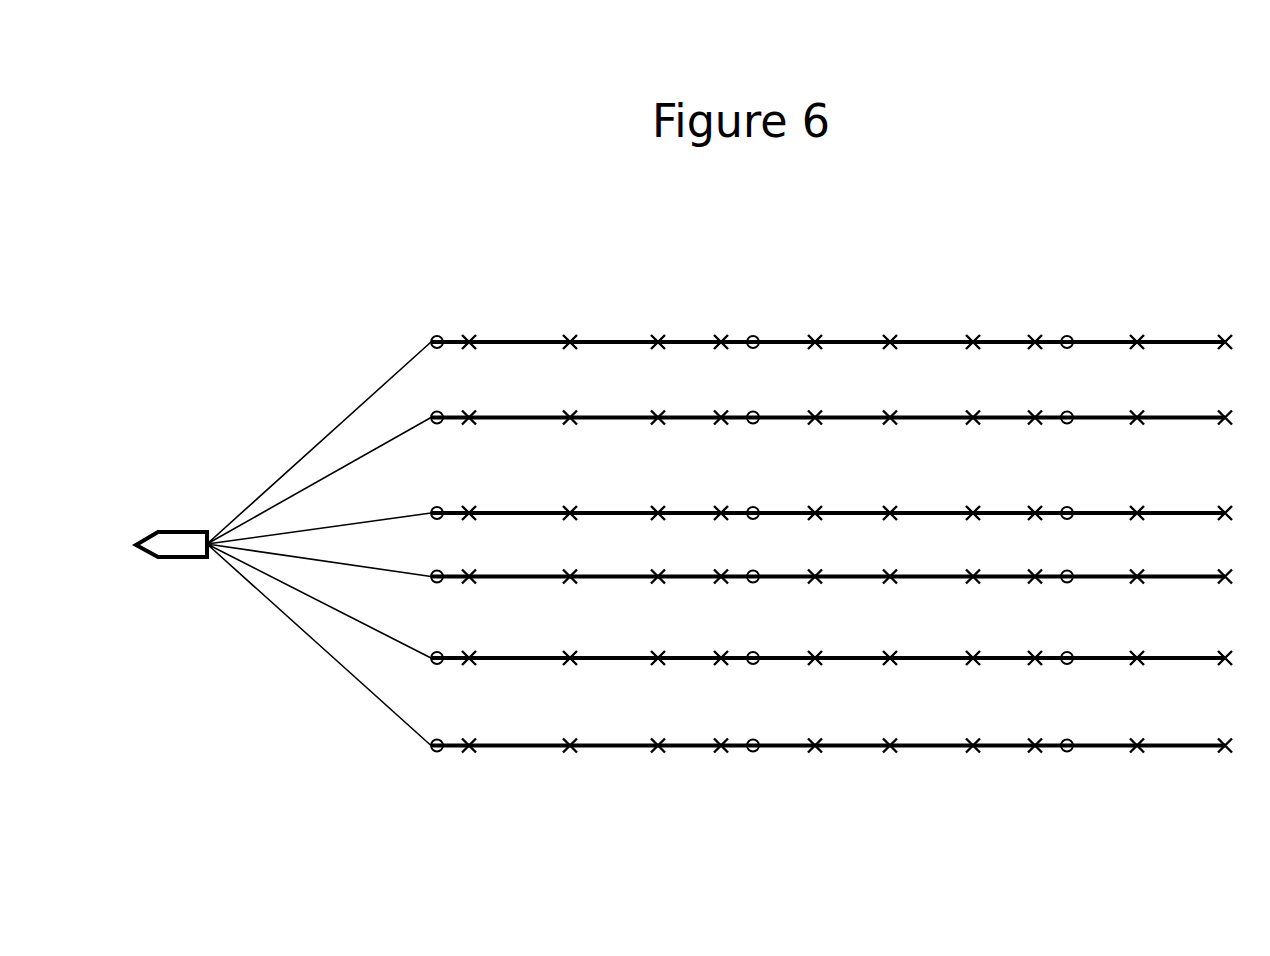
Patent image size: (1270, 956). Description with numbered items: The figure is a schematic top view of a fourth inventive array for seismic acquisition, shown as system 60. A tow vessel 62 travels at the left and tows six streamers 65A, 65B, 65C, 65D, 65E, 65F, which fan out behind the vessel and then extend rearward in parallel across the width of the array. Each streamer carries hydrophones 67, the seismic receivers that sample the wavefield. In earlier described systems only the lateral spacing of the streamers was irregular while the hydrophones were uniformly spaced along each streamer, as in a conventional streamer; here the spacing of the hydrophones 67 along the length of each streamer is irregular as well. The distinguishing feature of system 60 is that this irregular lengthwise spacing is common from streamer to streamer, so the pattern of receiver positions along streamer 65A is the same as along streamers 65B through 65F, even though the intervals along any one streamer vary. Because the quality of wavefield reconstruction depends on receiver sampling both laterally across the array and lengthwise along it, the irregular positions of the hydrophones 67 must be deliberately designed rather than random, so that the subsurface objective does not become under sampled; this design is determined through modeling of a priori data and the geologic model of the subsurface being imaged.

The system 60 is at (999, 306).
The tow vessel 62 is at (181, 543).
The streamer 65A is at (508, 342).
The streamer 65B is at (503, 418).
The streamer 65C is at (503, 513).
The streamer 65D is at (500, 576).
The streamer 65E is at (503, 658).
The streamer 65F is at (496, 746).
The hydrophone 67 is at (817, 513).